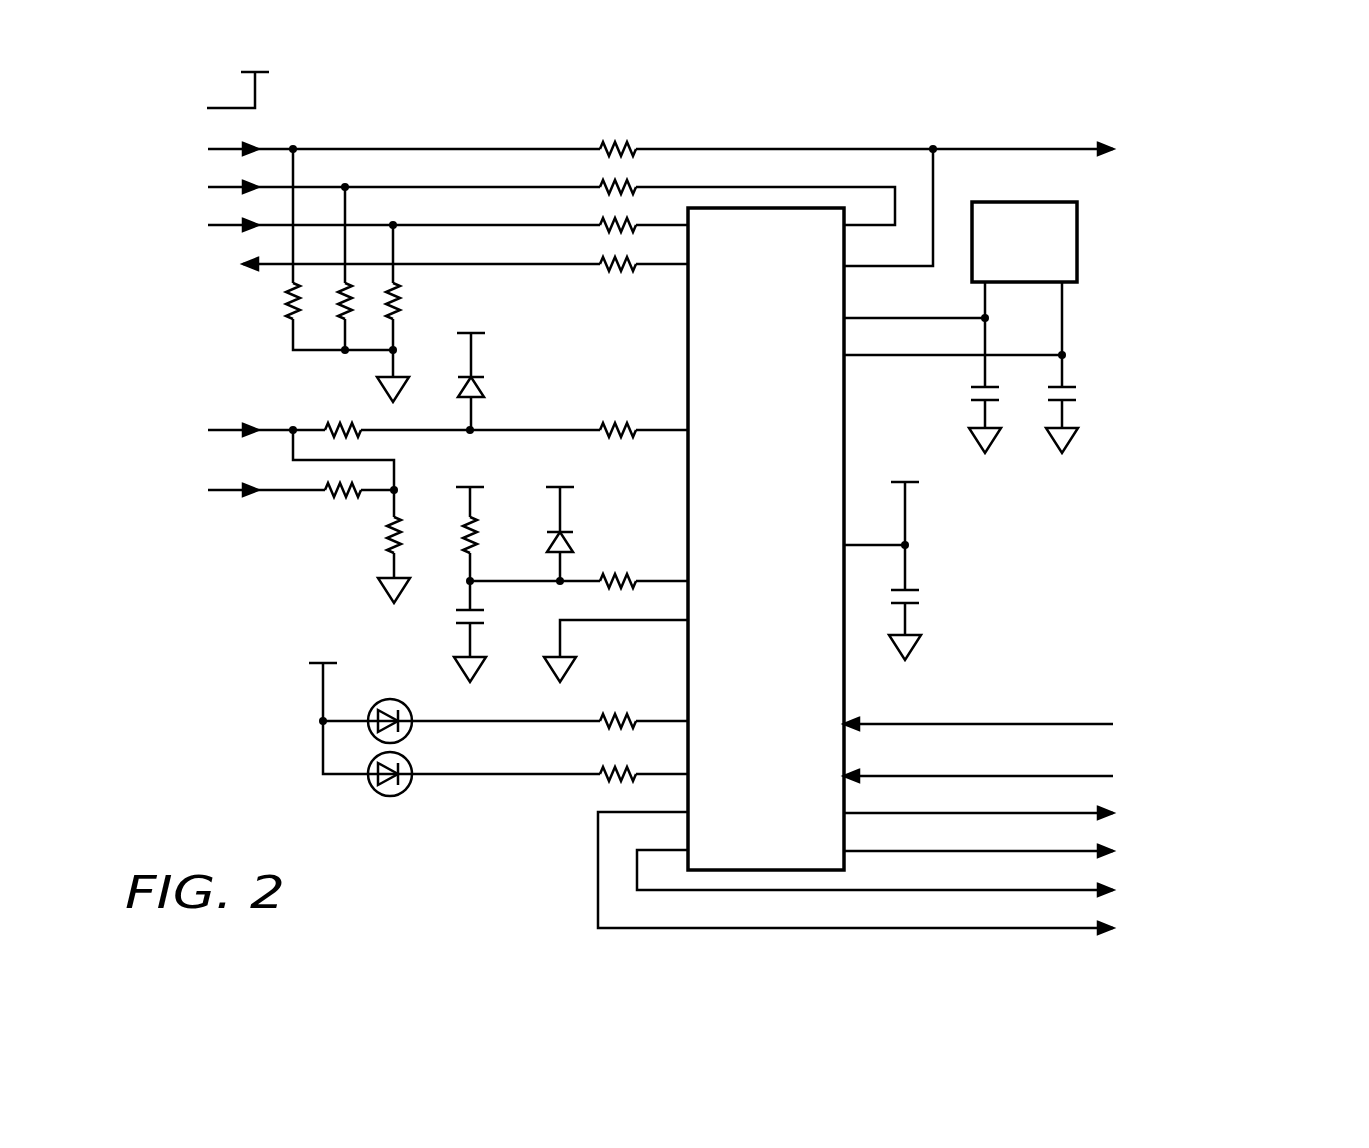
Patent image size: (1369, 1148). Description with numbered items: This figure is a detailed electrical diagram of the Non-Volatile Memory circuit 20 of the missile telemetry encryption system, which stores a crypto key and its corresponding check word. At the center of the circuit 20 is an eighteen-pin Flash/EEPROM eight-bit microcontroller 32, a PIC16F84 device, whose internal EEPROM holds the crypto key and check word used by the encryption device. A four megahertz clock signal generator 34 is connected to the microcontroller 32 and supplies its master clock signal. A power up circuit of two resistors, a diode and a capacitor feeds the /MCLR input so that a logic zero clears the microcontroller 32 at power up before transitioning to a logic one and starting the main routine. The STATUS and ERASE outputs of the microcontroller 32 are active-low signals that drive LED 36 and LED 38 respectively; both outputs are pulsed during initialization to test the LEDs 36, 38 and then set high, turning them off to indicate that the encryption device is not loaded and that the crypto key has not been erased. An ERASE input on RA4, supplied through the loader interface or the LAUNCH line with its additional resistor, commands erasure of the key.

The Non-Volatile Memory circuit 20 is at (237, 641).
The 18-pin Flash/EEPROM 8-bit microcontroller 32 is at (712, 334).
The 4 MHz clock signal generator 34 is at (1073, 236).
The LED 36 is at (411, 709).
The LED 38 is at (411, 787).